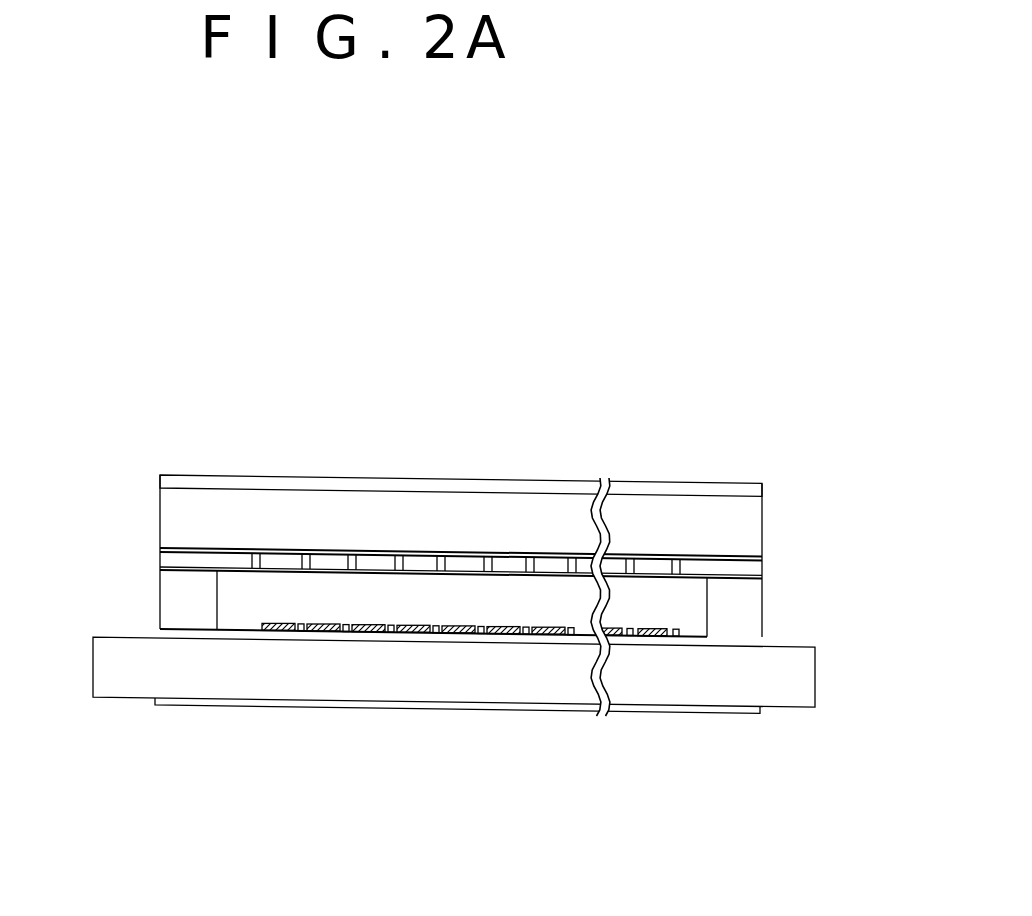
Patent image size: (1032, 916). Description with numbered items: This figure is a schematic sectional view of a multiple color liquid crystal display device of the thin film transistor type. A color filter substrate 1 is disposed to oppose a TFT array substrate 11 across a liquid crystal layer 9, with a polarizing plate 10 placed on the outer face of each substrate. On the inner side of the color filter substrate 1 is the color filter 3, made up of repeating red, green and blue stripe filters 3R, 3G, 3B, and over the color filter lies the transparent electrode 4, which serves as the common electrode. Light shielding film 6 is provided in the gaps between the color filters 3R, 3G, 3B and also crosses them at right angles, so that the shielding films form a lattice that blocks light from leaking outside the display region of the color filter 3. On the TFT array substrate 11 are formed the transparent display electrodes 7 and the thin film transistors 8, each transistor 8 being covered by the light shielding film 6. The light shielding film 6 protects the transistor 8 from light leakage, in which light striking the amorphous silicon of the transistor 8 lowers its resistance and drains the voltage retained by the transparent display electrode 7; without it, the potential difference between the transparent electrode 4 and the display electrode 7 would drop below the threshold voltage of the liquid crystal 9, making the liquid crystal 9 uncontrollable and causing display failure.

The color filter substrate 1 is at (625, 513).
The color filter 3 is at (175, 553).
The red color filter 3R is at (415, 539).
The green color filter 3G is at (476, 540).
The blue color filter 3B is at (517, 540).
The transparent electrode 4 is at (461, 437).
The light shielding film 6 is at (482, 466).
The transparent display electrode 7 is at (377, 630).
The thin film transistor 8 is at (399, 759).
The liquid crystal 9 is at (370, 435).
The polarizing plate 10 is at (498, 488).
The TFT array substrate 11 is at (660, 690).